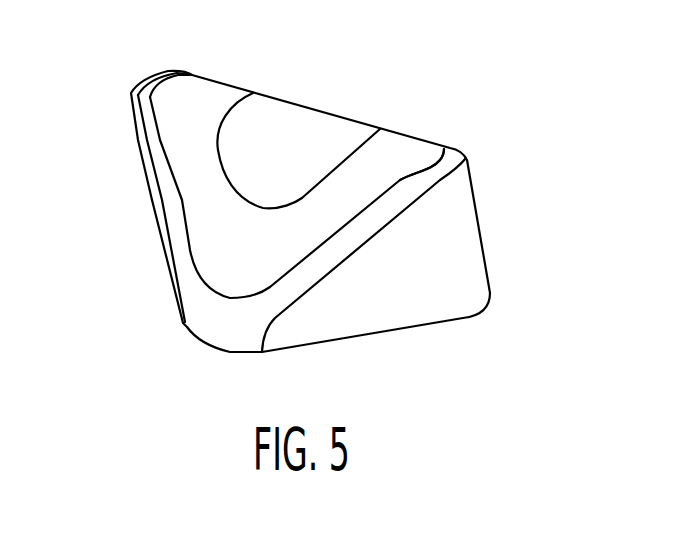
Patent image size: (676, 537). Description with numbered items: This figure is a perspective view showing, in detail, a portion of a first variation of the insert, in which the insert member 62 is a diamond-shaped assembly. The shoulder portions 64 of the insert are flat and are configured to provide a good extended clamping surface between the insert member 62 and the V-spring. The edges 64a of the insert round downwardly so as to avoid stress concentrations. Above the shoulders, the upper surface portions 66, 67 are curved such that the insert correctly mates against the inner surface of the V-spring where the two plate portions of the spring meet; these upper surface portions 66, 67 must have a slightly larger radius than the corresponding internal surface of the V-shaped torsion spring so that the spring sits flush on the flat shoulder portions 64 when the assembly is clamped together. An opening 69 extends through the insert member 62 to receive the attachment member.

The insert member 62 is at (296, 104).
The shoulder portions 64 is at (183, 203).
The edges 64a is at (170, 248).
The upper surface portion 66 is at (202, 90).
The upper surface portion 67 is at (413, 147).
The opening 69 is at (325, 133).